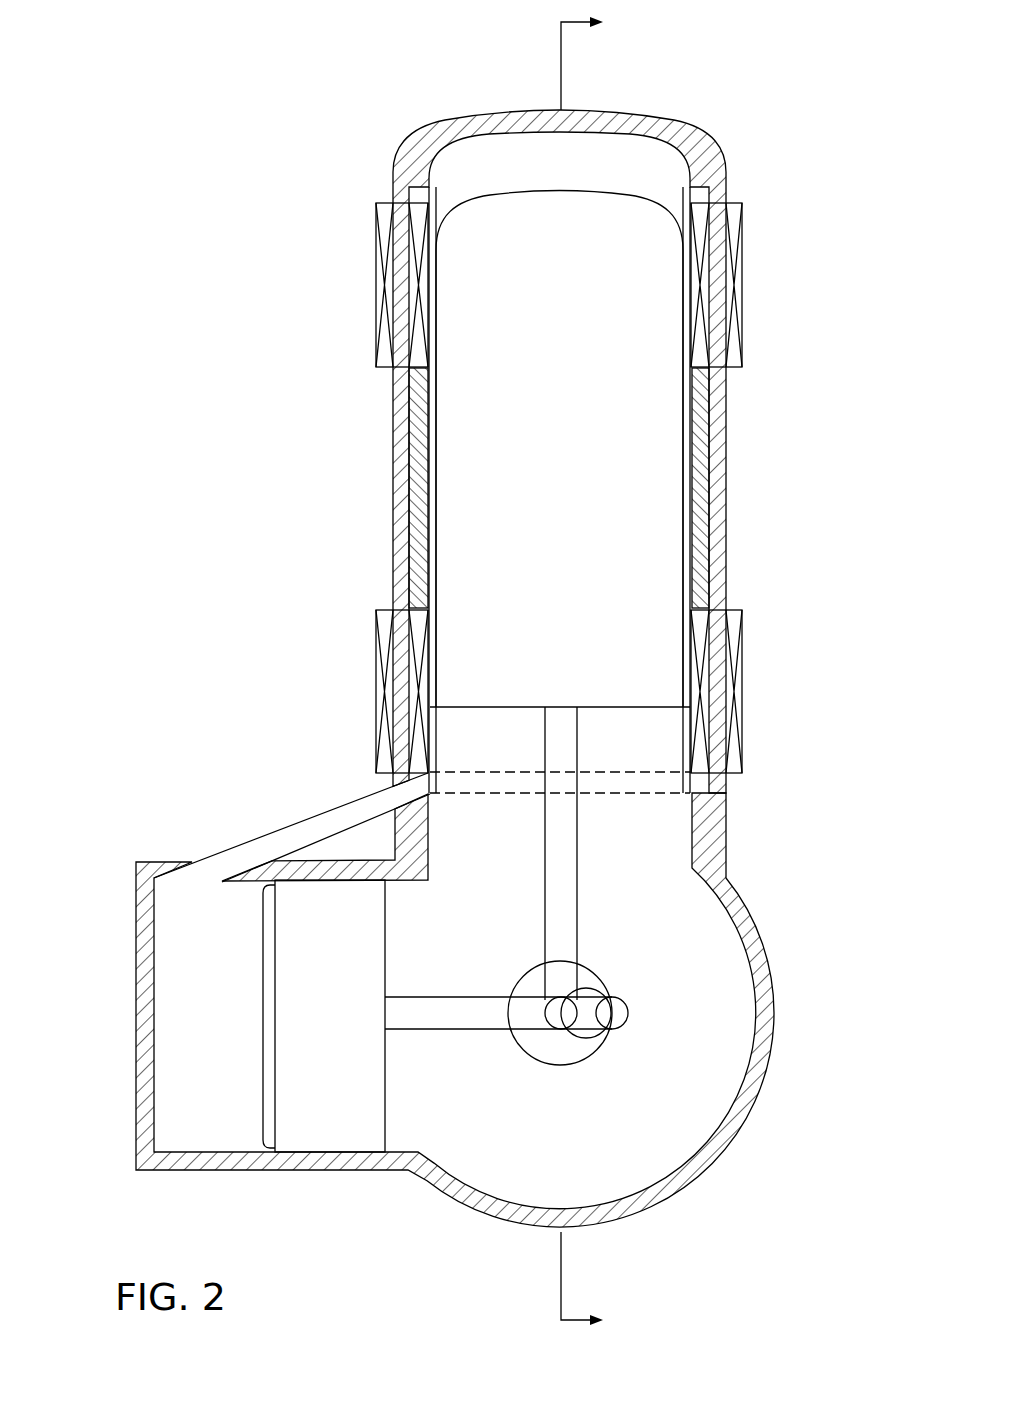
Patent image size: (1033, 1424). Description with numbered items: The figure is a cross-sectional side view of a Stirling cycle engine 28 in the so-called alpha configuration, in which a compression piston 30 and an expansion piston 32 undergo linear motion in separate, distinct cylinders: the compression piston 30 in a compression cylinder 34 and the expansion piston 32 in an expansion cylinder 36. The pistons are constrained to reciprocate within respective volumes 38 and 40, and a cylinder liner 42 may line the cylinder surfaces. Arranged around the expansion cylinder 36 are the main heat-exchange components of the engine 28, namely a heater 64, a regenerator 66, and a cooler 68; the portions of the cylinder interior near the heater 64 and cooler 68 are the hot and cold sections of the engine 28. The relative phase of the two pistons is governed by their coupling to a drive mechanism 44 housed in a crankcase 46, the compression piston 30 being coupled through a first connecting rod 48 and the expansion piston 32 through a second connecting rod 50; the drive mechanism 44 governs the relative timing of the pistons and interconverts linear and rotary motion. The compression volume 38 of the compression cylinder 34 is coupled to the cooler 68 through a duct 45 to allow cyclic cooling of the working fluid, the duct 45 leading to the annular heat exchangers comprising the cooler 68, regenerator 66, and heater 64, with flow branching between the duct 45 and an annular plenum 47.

The Stirling cycle engine 28 is at (230, 130).
The compression piston 30 is at (316, 1082).
The expansion piston 32 is at (613, 211).
The compression cylinder 34 is at (168, 1152).
The expansion cylinder 36 is at (457, 149).
The compression volume 38 is at (223, 1023).
The expansion volume 40 is at (594, 170).
The cylinder liner 42 is at (425, 228).
The drive mechanism 44 is at (617, 968).
The duct 45 is at (279, 828).
The crankcase 46 is at (610, 1128).
The annular plenum 47 is at (620, 786).
The first connecting rod 48 is at (449, 1030).
The second connecting rod 50 is at (577, 878).
The heater 64 is at (743, 268).
The regenerator 66 is at (704, 456).
The cooler 68 is at (700, 624).